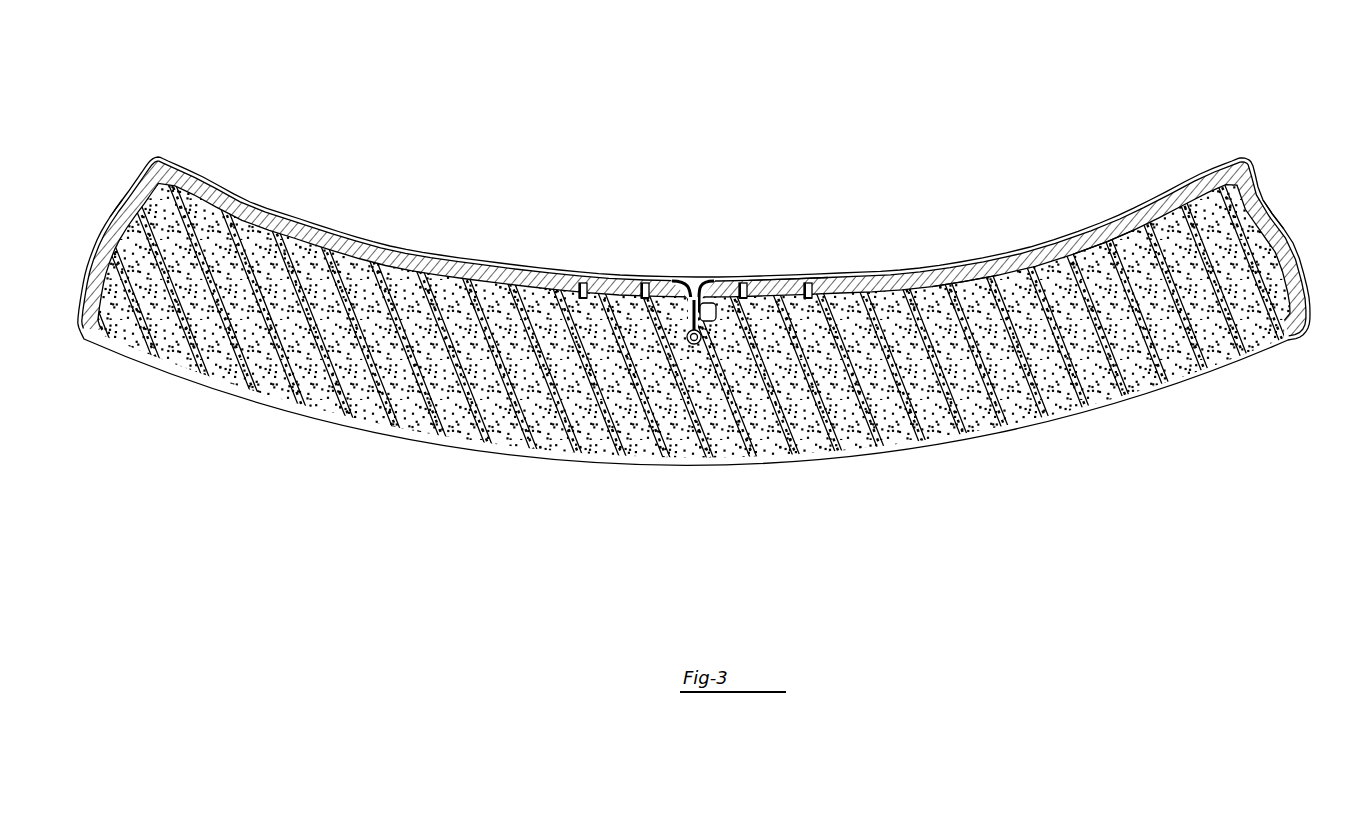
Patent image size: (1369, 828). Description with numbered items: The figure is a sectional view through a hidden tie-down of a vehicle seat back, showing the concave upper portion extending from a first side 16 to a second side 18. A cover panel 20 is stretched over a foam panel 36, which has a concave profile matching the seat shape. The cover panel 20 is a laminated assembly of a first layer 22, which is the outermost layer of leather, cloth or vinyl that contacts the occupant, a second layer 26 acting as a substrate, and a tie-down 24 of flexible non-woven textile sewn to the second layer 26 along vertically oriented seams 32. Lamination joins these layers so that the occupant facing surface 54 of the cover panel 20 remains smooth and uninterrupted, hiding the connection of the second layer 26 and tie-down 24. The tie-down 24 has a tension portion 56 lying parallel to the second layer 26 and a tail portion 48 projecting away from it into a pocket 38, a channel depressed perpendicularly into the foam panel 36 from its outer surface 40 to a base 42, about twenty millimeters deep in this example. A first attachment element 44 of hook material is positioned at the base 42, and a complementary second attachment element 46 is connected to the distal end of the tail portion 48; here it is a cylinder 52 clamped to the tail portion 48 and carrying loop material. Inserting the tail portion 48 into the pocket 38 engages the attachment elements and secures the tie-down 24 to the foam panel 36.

The first side 16 is at (1272, 208).
The second side 18 is at (114, 207).
The cover panel 20 is at (205, 168).
The first layer 22 is at (1123, 226).
The tie-down 24 is at (782, 284).
The second layer 26 is at (1098, 236).
The seams 32 is at (578, 290).
The foam panel 36 is at (284, 398).
The pocket 38 is at (675, 322).
The outer surface 40 is at (965, 275).
The base 42 is at (689, 345).
The first attachment element 44 is at (693, 346).
The second attachment element 46 is at (700, 345).
The tail portion 48 is at (706, 296).
The cylinder 52 is at (703, 338).
The occupant facing surface 54 is at (340, 241).
The tension portion 56 is at (612, 284).